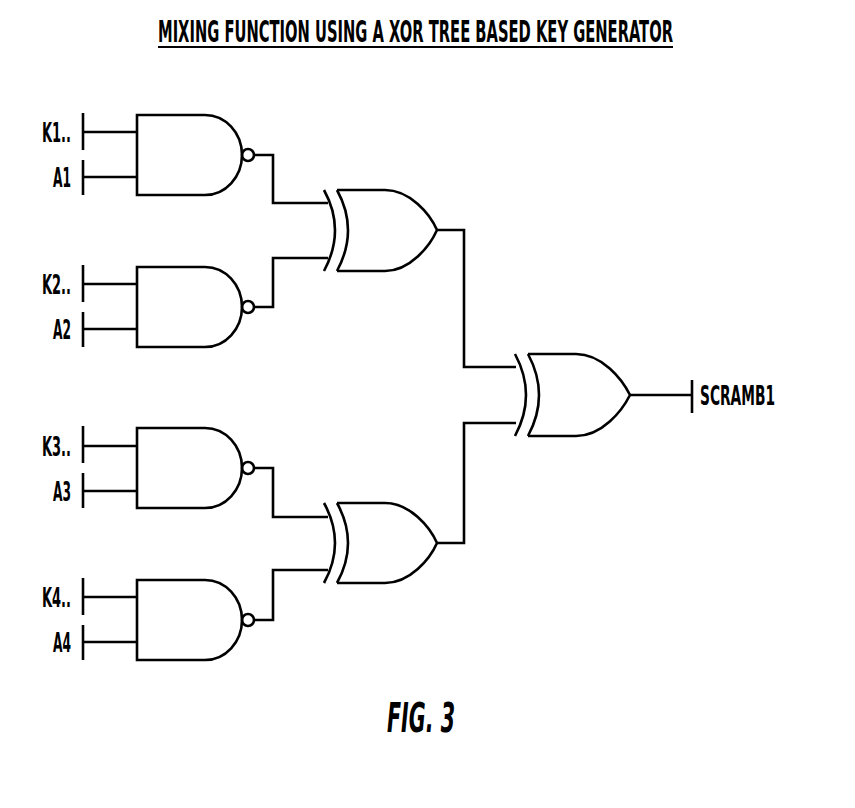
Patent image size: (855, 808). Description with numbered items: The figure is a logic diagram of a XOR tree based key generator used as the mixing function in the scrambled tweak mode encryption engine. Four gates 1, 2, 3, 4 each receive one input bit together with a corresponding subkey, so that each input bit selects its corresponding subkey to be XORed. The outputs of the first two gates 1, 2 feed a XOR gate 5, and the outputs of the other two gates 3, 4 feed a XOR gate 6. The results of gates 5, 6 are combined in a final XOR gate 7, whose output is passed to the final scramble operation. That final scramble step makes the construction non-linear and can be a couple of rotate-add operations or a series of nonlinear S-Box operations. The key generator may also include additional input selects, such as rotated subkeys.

The NAND gate 1 is at (232, 174).
The NAND gate 2 is at (232, 321).
The NAND gate 3 is at (232, 487).
The NAND gate 4 is at (232, 634).
The XOR gate 5 is at (420, 278).
The XOR gate 6 is at (420, 523).
The XOR gate 7 is at (572, 414).